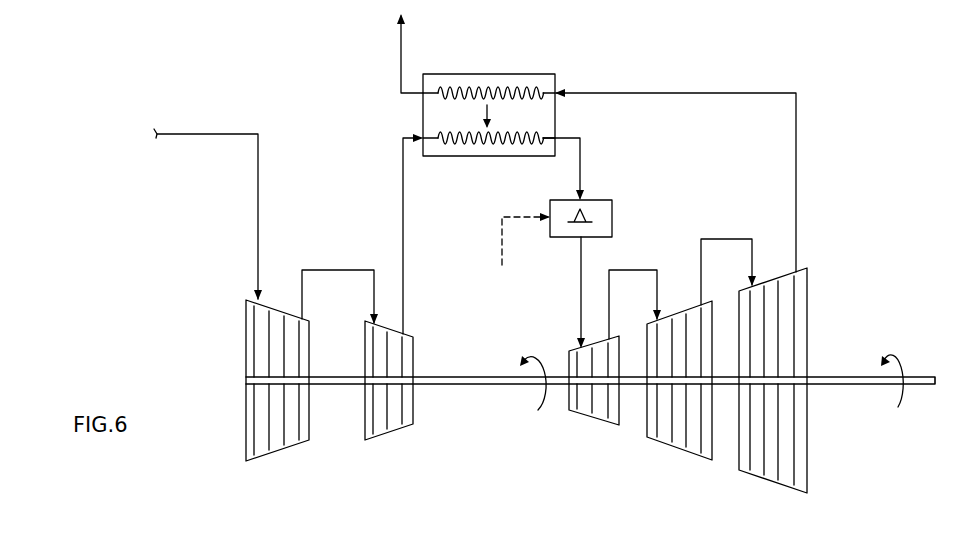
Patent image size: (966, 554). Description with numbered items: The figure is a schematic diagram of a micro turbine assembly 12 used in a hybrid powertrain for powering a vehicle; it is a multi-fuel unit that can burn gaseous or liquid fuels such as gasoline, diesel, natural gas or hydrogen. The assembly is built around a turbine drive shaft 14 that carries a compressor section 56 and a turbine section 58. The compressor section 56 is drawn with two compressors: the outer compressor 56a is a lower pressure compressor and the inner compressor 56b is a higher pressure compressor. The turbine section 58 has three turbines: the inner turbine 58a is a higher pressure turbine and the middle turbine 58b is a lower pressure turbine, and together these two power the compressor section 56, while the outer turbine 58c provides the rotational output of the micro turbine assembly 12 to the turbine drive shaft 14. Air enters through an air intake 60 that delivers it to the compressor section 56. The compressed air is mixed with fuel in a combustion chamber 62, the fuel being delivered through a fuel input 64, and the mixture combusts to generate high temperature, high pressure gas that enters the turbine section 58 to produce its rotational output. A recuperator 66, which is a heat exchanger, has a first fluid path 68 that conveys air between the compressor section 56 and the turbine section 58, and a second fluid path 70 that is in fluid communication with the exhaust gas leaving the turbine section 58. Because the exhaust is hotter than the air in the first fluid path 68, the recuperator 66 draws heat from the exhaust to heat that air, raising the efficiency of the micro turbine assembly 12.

The micro turbine assembly 12 is at (694, 63).
The turbine drive shaft 14 is at (840, 377).
The compressor section 56 is at (347, 388).
The outer compressor 56a is at (289, 455).
The inner compressor 56b is at (391, 422).
The turbine section 58 is at (712, 374).
The inner turbine 58a is at (592, 418).
The middle turbine 58b is at (667, 444).
The outer turbine 58c is at (798, 467).
The air intake 60 is at (200, 133).
The combustion chamber 62 is at (613, 208).
The fuel input 64 is at (501, 246).
The recuperator 66 is at (489, 173).
The first fluid path 68 is at (474, 141).
The second fluid path 70 is at (521, 93).